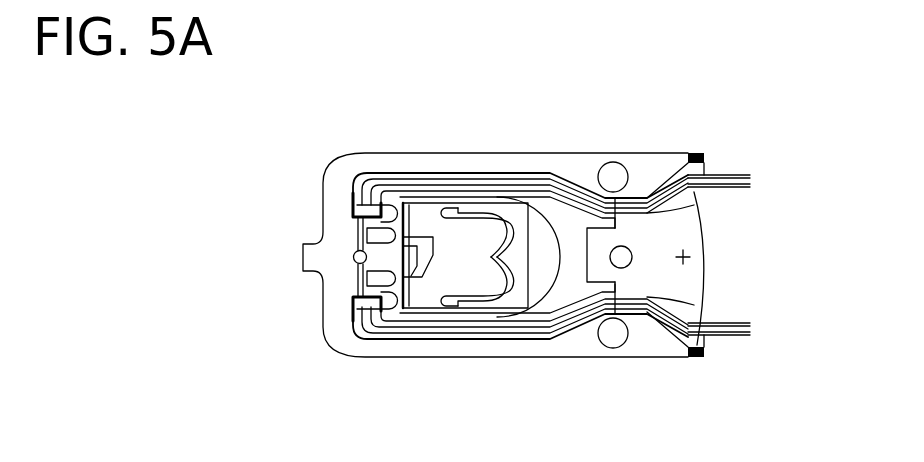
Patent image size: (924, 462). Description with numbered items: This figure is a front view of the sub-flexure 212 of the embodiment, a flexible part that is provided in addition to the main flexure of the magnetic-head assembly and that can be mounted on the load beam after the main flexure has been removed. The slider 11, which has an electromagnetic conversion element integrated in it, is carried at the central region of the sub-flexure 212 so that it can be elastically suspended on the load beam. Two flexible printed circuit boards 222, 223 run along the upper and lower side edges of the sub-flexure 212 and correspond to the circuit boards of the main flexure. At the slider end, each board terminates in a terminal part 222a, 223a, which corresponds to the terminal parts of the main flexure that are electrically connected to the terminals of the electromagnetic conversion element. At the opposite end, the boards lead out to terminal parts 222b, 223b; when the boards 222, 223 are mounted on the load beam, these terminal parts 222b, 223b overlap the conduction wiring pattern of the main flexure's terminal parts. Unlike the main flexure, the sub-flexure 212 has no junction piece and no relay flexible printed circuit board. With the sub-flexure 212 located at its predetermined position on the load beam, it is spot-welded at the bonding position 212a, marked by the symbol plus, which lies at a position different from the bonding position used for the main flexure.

The slider 11 is at (428, 224).
The sub-flexure 212 is at (500, 135).
The bonding position 212a is at (688, 256).
The flexible printed circuit board 222 is at (561, 215).
The terminal part 222a is at (365, 234).
The terminal part 222b is at (753, 168).
The flexible printed circuit board 223 is at (557, 318).
The terminal part 223a is at (365, 278).
The terminal part 223b is at (753, 318).